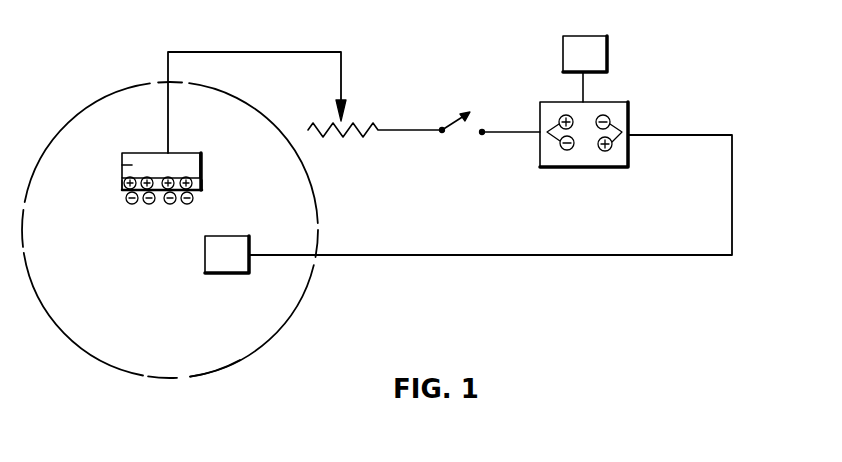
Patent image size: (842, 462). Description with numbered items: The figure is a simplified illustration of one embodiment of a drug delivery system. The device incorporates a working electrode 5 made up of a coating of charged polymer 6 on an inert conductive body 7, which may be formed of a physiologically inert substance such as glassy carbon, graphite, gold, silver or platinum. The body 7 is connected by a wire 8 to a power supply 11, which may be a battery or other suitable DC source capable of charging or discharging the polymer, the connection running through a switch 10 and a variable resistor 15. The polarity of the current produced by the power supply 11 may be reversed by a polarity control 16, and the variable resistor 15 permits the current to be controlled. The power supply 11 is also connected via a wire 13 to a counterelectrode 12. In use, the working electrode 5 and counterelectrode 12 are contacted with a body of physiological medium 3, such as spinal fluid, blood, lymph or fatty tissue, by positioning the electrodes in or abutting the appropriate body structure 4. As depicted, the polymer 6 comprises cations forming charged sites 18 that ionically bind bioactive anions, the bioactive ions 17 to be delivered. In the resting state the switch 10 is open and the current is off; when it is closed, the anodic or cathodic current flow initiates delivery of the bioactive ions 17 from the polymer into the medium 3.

The body of physiological medium 3 is at (139, 352).
The body structure 4 is at (222, 372).
The working electrode 5 is at (203, 153).
The charged polymer 6 is at (203, 184).
The inert conductive body 7 is at (131, 166).
The wire 8 is at (302, 52).
The switch 10 is at (470, 116).
The power supply 11 is at (540, 153).
The counterelectrode 12 is at (235, 258).
The wire 13 is at (556, 256).
The variable resistor 15 is at (340, 130).
The polarity control 16 is at (607, 37).
The bioactive ions 17 is at (131, 205).
The charged sites 18 is at (121, 188).